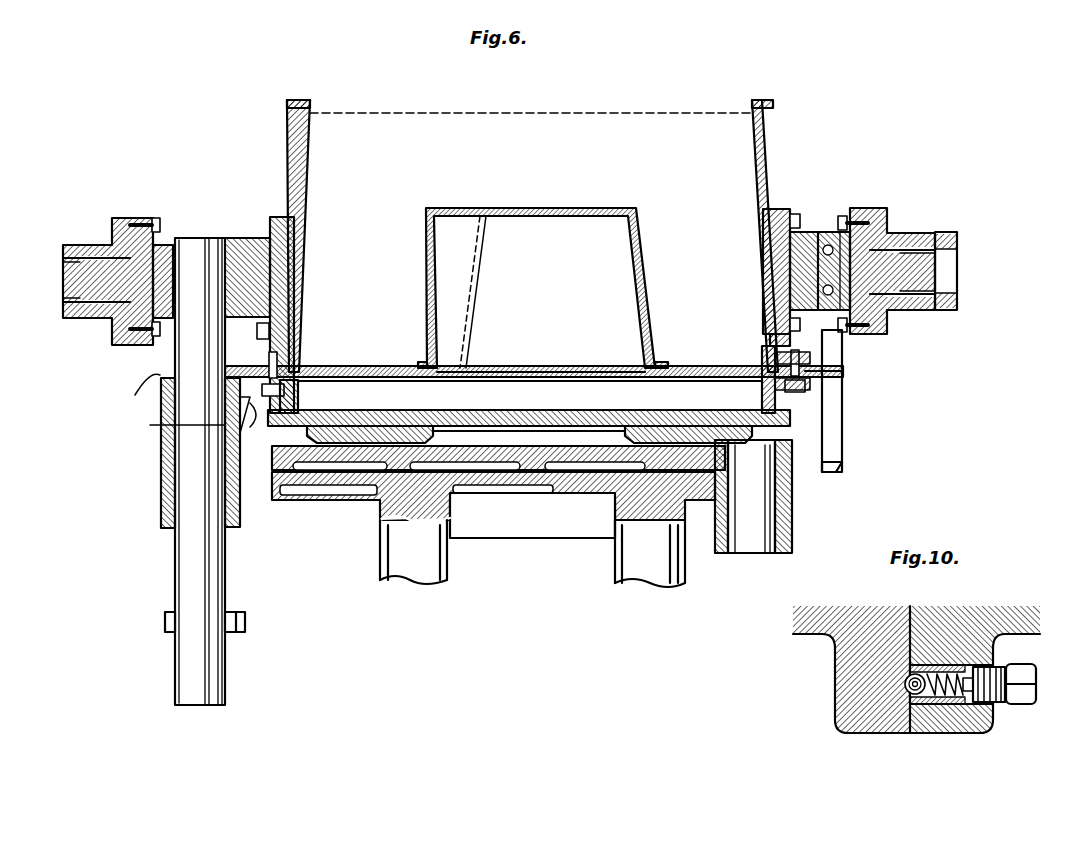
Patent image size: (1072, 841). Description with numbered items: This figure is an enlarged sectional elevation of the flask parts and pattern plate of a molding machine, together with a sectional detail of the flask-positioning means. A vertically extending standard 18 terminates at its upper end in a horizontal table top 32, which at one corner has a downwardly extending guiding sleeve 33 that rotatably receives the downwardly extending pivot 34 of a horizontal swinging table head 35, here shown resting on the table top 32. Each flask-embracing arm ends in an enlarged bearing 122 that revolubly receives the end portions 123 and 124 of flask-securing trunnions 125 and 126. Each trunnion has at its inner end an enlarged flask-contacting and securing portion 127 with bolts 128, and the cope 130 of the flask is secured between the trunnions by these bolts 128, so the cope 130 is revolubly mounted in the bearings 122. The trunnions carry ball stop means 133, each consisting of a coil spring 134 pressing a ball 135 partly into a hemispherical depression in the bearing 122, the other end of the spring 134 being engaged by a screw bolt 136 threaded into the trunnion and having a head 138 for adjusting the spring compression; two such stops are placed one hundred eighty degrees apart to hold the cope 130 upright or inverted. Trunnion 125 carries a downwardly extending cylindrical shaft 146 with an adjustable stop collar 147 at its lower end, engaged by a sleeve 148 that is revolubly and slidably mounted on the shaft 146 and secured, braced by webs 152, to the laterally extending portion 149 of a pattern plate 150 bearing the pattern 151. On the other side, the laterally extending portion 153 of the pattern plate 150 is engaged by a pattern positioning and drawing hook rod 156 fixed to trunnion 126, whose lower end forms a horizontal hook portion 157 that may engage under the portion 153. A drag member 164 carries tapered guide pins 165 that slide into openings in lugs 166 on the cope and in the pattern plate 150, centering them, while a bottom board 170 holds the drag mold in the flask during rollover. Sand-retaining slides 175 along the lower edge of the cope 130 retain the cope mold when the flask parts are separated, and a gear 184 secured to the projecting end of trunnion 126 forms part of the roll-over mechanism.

In FIG. 6, the standard 18 is at (617, 562).
In FIG. 6, the table top 32 is at (276, 498).
In FIG. 6, the guiding sleeve 33 is at (794, 510).
In FIG. 6, the pivot 34 is at (752, 534).
In FIG. 6, the table head 35 is at (278, 456).
In FIG. 6, the bearing 122 is at (88, 245).
In FIG. 10, the bearing 122 is at (868, 620).
In FIG. 6, the end portion 123 is at (64, 286).
In FIG. 6, the end portion 124 is at (950, 272).
In FIG. 6, the flask-securing trunnion 125 is at (222, 240).
In FIG. 10, the flask-securing trunnion 125 is at (950, 620).
In FIG. 6, the flask-securing trunnion 126 is at (812, 236).
In FIG. 6, the flask-contacting and securing portion 127 is at (262, 218).
In FIG. 6, the bolts 128 is at (260, 342).
In FIG. 6, the cope 130 is at (750, 141).
In FIG. 6, the ball stop means 133 is at (143, 222).
In FIG. 10, the ball stop means 133 is at (998, 706).
In FIG. 10, the coil spring 134 is at (940, 700).
In FIG. 10, the ball 135 is at (906, 682).
In FIG. 10, the screw bolt 136 is at (995, 665).
In FIG. 10, the head 138 is at (1022, 668).
In FIG. 6, the shaft 146 is at (182, 552).
In FIG. 6, the stop collar 147 is at (165, 619).
In FIG. 6, the sleeve 148 is at (160, 460).
In FIG. 6, the laterally extending portion 149 is at (139, 392).
In FIG. 6, the pattern plate 150 is at (352, 360).
In FIG. 6, the pattern 151 is at (425, 231).
In FIG. 6, the webs 152 is at (169, 424).
In FIG. 6, the laterally extending portion 153 is at (845, 371).
In FIG. 6, the hook rod 156 is at (832, 405).
In FIG. 6, the hook portion 157 is at (843, 467).
In FIG. 6, the drag member 164 is at (298, 395).
In FIG. 6, the guide pins 165 is at (790, 350).
In FIG. 6, the lugs 166 is at (800, 360).
In FIG. 6, the bottom board 170 is at (443, 402).
In FIG. 6, the sand-retaining slides 175 is at (300, 362).
In FIG. 6, the gear 184 is at (950, 236).